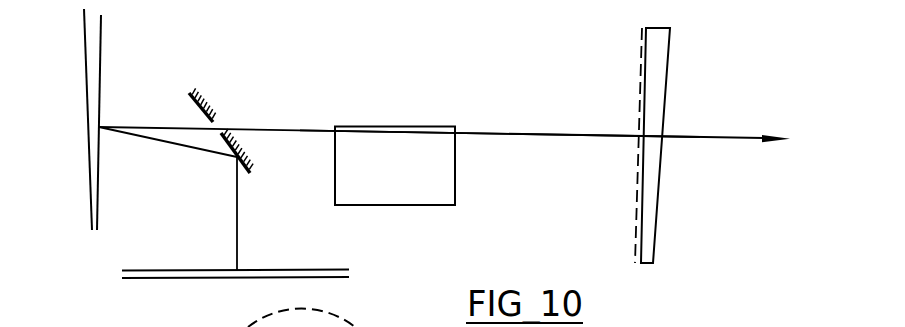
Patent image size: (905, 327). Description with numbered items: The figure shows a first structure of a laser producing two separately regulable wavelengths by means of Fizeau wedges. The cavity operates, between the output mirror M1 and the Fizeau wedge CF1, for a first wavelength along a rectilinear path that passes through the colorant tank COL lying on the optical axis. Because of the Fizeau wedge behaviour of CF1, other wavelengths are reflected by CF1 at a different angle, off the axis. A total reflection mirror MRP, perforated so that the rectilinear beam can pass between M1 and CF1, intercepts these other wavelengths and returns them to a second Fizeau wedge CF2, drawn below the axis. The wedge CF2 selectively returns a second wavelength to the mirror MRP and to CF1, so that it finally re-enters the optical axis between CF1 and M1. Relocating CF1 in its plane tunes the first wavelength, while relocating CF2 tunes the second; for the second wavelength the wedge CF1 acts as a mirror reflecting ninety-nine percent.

The Fizeau wedge CF1 is at (68, 119).
The second Fizeau wedge CF2 is at (235, 291).
The total reflection mirror MRP is at (212, 114).
The colorant tank COL is at (395, 166).
The output mirror M1 is at (663, 133).